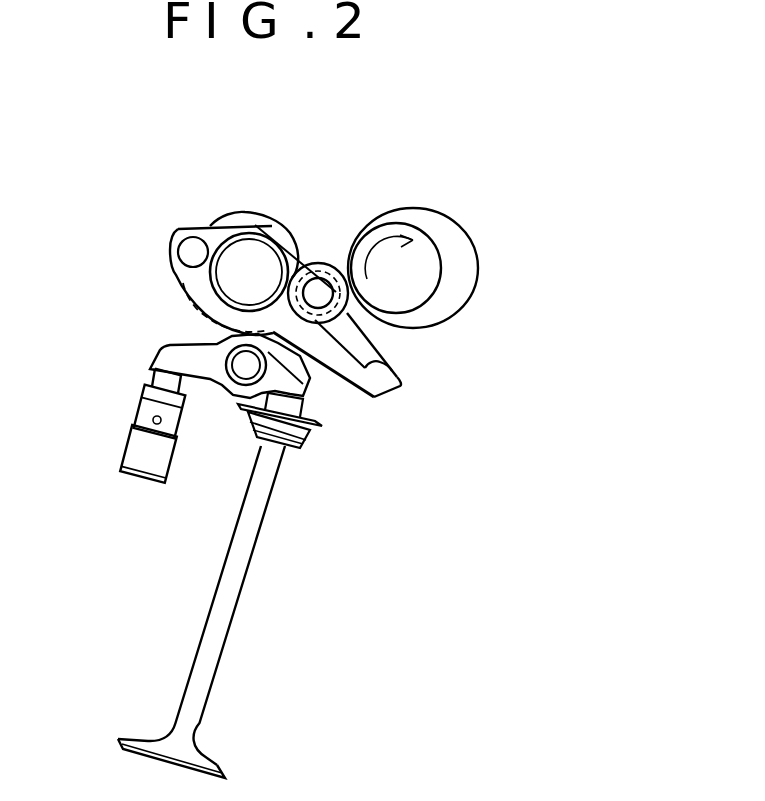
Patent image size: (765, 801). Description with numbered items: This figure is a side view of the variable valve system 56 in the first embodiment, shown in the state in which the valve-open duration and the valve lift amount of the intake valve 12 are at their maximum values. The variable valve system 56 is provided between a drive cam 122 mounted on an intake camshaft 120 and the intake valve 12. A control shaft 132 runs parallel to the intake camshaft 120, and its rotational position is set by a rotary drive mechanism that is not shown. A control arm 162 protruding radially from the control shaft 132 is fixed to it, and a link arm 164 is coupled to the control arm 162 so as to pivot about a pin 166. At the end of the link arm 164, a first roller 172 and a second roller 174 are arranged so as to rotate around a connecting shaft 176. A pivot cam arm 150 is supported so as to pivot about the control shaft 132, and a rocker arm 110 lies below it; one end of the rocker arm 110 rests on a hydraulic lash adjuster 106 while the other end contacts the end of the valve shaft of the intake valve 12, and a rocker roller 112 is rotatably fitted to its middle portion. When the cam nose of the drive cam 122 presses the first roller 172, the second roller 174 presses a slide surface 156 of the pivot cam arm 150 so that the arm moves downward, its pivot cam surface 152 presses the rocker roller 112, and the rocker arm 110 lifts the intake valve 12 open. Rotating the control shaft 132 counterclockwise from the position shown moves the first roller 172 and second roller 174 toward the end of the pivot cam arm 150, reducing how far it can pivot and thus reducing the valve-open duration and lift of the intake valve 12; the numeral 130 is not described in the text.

The variable valve system 56 is at (184, 191).
The intake valve 12 is at (205, 753).
The hydraulic lash adjuster 106 is at (132, 447).
The rocker arm 110 is at (173, 358).
The rocker roller 112 is at (287, 327).
The intake camshaft 120 is at (423, 251).
The drive cam 122 is at (453, 288).
The intermediate arm 130 is at (166, 256).
The control shaft 132 is at (252, 250).
The pivot cam arm 150 is at (383, 394).
The pivot cam surface 152 is at (186, 322).
The slide surface 156 is at (394, 377).
The control arm 162 is at (220, 234).
The link arm 164 is at (185, 292).
The pin 166 is at (190, 248).
The first roller 172 is at (327, 262).
The second roller 174 is at (310, 266).
The connecting shaft 176 is at (350, 306).